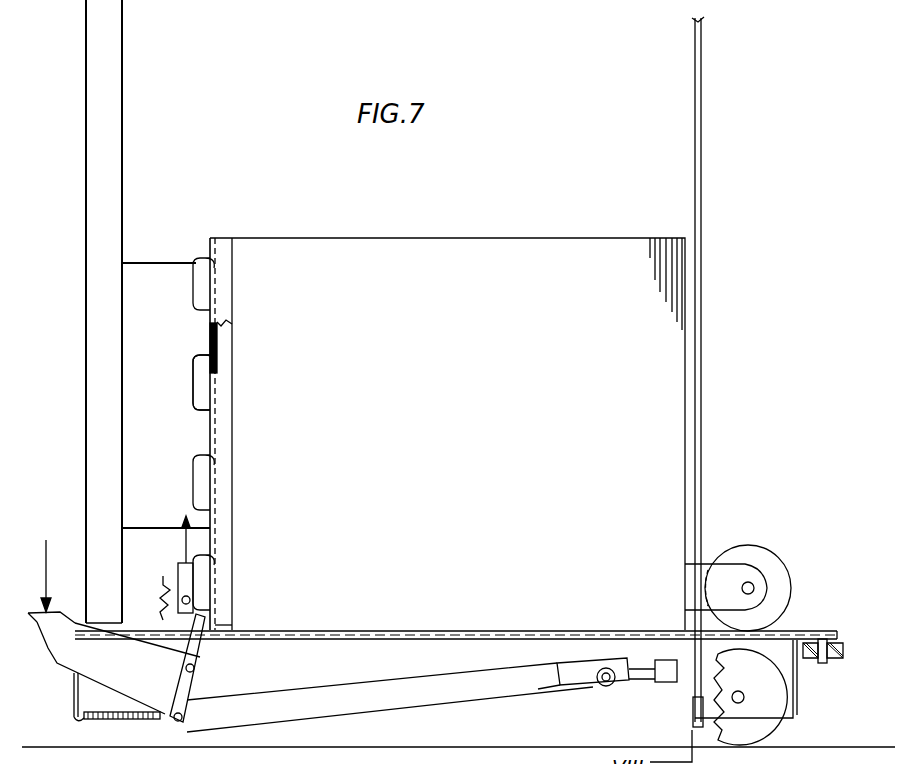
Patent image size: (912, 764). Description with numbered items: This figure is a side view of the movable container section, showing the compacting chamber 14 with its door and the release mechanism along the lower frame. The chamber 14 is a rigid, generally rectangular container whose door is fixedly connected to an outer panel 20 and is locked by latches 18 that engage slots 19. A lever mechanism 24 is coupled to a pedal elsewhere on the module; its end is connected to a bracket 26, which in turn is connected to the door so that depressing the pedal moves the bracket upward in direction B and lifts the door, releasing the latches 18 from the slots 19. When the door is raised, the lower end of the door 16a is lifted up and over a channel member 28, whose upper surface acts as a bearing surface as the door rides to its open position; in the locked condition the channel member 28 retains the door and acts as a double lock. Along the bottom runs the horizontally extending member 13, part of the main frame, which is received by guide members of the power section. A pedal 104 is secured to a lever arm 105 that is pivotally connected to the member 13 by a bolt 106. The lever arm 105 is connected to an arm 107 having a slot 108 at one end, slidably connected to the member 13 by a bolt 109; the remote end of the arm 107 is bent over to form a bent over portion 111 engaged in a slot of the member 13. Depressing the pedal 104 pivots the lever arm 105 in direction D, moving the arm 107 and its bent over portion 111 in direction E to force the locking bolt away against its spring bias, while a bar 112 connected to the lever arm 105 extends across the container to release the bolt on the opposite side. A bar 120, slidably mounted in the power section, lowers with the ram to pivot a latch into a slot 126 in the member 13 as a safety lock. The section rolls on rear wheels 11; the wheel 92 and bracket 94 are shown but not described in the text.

The outer panel 20 is at (86, 302).
The compacting chamber 14 is at (250, 424).
The slots 19 is at (210, 328).
The latches 18 is at (198, 382).
The bracket 26 is at (183, 565).
The lever mechanism 24 is at (178, 592).
The bar 112 is at (162, 598).
The lower end of the door 16a is at (226, 615).
The horizontally extending member 13 is at (428, 631).
The pedal 104 is at (36, 622).
The lever arm 105 is at (80, 665).
The bolt 106 is at (205, 680).
The channel member 28 is at (212, 630).
The arm 107 is at (368, 695).
The slot 108 is at (622, 657).
The bolt 109 is at (615, 685).
The bent over portion 111 is at (672, 684).
The bar 120 is at (690, 487).
The slot 126 is at (692, 727).
The wheel 92 is at (791, 592).
The bracket 94 is at (840, 660).
The rear wheels 11 is at (777, 722).